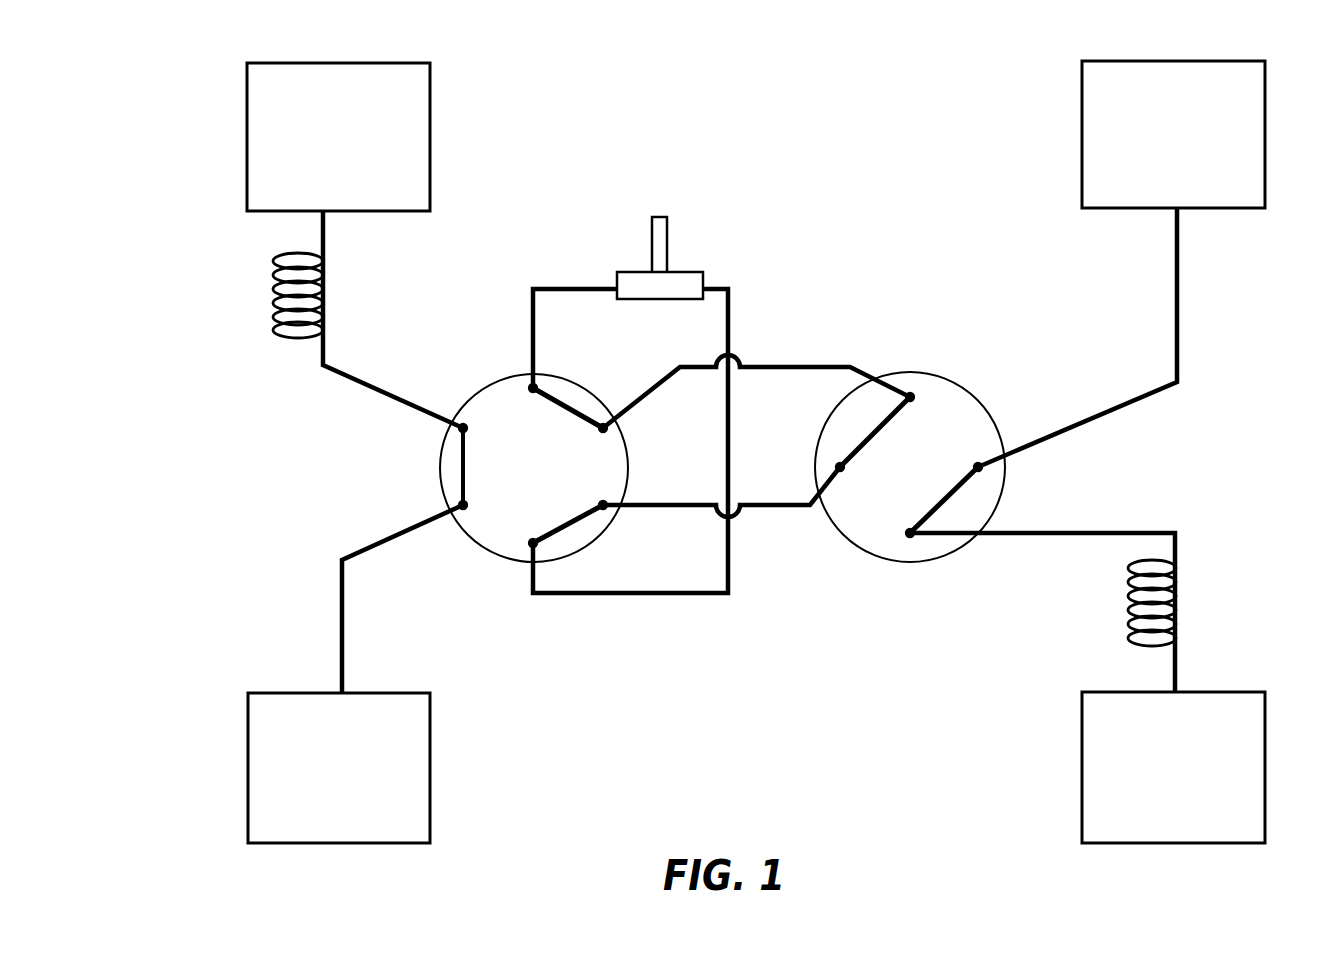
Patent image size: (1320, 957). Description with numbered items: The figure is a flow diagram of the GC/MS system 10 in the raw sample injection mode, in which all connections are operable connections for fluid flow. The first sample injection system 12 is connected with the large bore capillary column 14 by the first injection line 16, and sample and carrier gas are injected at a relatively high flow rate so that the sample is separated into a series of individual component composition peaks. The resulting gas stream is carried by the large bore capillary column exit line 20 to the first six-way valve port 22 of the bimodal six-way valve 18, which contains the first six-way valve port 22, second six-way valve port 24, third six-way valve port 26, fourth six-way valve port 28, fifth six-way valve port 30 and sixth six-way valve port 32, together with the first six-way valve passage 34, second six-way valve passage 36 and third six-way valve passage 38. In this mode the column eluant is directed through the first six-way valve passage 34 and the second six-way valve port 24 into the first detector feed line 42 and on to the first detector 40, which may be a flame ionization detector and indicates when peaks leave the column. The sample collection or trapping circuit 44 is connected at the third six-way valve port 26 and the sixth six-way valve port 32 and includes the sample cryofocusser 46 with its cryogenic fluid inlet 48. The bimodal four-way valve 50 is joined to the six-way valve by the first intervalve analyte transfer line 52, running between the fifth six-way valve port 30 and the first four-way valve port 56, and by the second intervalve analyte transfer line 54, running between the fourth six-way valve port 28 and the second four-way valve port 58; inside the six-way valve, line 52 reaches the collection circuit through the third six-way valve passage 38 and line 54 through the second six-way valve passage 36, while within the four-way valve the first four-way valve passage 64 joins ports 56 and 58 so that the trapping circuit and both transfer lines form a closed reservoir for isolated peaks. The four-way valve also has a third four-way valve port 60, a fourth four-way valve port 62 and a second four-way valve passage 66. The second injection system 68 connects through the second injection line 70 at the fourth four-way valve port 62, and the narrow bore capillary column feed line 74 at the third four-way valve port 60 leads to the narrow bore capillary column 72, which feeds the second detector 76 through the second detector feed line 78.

The GC/MS system 10 is at (565, 158).
The first sample injection system 12 is at (430, 100).
The large bore capillary column 14 is at (274, 320).
The first injection line 16 is at (322, 222).
The six-way valve 18 is at (518, 479).
The large bore capillary column exit line 20 is at (373, 392).
The first six-way valve port 22 is at (462, 423).
The second six-way valve port 24 is at (462, 511).
The third six-way valve port 26 is at (533, 547).
The fourth six-way valve port 28 is at (604, 507).
The fifth six-way valve port 30 is at (606, 428).
The sixth six-way valve port 32 is at (535, 386).
The first six-way valve passage 34 is at (461, 450).
The second six-way valve passage 36 is at (574, 528).
The third six-way valve passage 38 is at (572, 406).
The first detector 40 is at (430, 760).
The first detector feed line 42 is at (341, 603).
The sample collection or trapping circuit 44 is at (728, 305).
The sample cryofocusser 46 is at (700, 271).
The cryogenic fluid inlet 48 is at (651, 240).
The four-way valve 50 is at (897, 476).
The first intervalve analyte transfer line 52 is at (767, 368).
The second intervalve analyte transfer line 54 is at (777, 507).
The first four-way valve port 56 is at (910, 394).
The second four-way valve port 58 is at (838, 468).
The third four-way valve port 60 is at (908, 536).
The fourth four-way valve port 62 is at (979, 463).
The first four-way valve passage 64 is at (870, 437).
The second four-way valve passage 66 is at (951, 495).
The second injection system 68 is at (1082, 118).
The second injection line 70 is at (1127, 408).
The narrow bore capillary column 72 is at (1177, 600).
The narrow bore capillary column feed line 74 is at (1128, 535).
The second detector 76 is at (1082, 730).
The second detector feed line 78 is at (1177, 670).